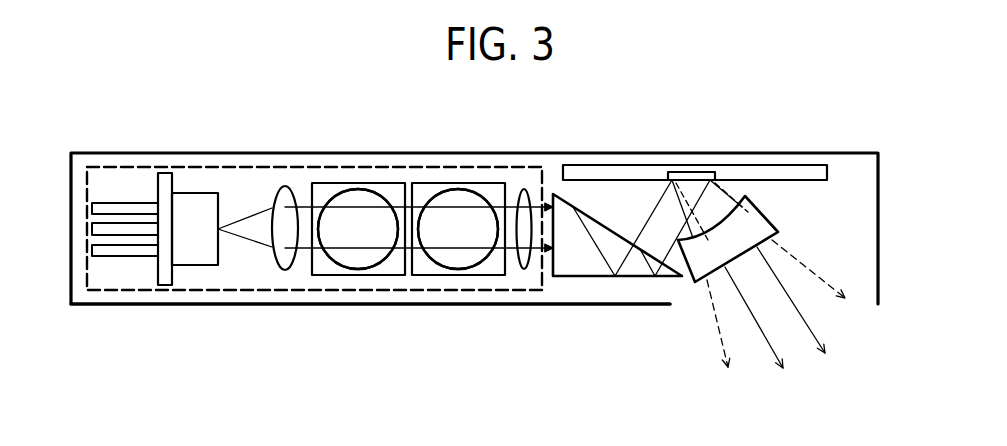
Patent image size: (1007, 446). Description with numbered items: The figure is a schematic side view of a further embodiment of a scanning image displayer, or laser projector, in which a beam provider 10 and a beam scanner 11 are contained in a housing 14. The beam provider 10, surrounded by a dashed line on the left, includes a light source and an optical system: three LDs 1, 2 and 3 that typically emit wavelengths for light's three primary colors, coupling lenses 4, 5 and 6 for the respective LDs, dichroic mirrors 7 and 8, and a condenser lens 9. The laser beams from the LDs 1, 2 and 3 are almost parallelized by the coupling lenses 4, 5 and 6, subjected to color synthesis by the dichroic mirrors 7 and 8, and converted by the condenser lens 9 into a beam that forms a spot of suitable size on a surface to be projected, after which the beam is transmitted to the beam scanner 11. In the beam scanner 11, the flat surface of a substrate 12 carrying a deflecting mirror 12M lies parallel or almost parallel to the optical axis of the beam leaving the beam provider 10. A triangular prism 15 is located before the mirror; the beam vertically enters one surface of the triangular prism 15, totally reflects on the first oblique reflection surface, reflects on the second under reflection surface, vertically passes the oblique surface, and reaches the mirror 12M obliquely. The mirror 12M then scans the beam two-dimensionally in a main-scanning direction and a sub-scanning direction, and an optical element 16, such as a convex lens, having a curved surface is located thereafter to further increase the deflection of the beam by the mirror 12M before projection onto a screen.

The LD 1 is at (195, 266).
The LD 2 is at (357, 185).
The LD 3 is at (455, 185).
The coupling lens 4 is at (284, 271).
The coupling lens 5 is at (358, 229).
The coupling lens 6 is at (458, 229).
The dichroic mirror 7 is at (336, 276).
The dichroic mirror 8 is at (440, 276).
The condenser lens 9 is at (523, 189).
The beam provider 10 is at (252, 167).
The beam scanner 11 is at (837, 248).
The substrate 12 is at (775, 165).
The deflecting mirror 12M is at (692, 172).
The housing 14 is at (495, 305).
The triangular prism 15 is at (637, 277).
The optical element 16 is at (768, 218).